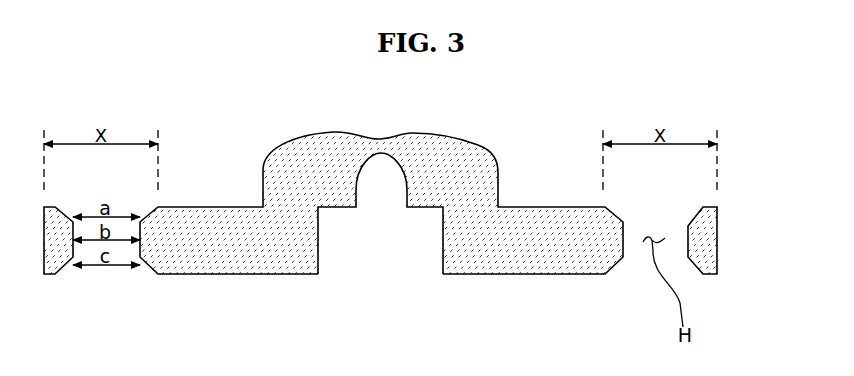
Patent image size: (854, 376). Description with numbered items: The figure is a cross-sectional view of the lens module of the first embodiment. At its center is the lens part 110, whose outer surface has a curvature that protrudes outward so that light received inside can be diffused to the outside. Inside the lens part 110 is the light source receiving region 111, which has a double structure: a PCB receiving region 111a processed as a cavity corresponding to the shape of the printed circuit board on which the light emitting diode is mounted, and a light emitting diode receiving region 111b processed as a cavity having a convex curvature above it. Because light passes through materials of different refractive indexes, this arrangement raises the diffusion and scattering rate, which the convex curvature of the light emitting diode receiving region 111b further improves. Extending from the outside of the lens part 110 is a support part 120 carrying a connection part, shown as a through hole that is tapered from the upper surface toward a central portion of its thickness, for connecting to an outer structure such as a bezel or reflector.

The lens part 110 is at (448, 143).
The light source receiving region 111 is at (409, 263).
The PCB receiving region 111a is at (318, 238).
The light emitting diode receiving region 111b is at (356, 188).
The support part 120 is at (714, 233).